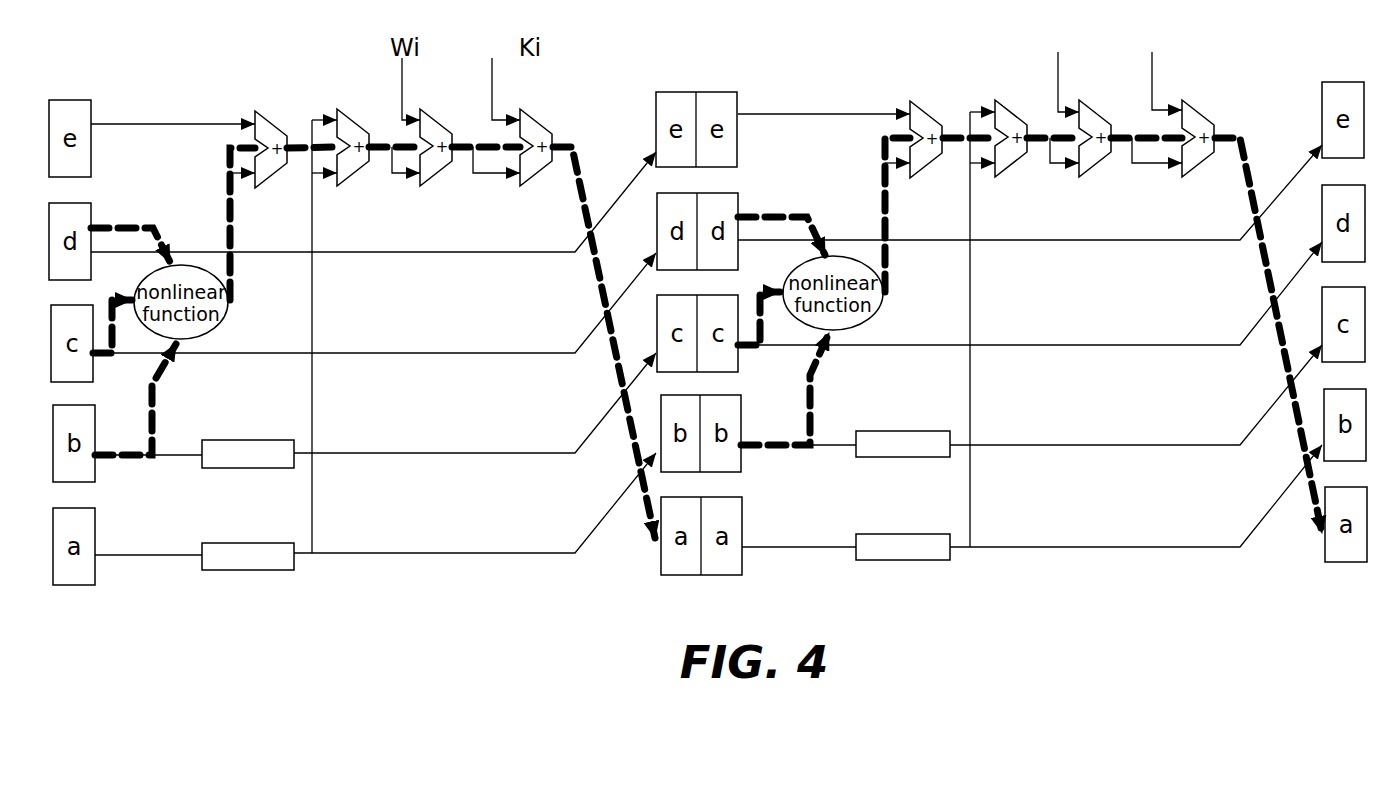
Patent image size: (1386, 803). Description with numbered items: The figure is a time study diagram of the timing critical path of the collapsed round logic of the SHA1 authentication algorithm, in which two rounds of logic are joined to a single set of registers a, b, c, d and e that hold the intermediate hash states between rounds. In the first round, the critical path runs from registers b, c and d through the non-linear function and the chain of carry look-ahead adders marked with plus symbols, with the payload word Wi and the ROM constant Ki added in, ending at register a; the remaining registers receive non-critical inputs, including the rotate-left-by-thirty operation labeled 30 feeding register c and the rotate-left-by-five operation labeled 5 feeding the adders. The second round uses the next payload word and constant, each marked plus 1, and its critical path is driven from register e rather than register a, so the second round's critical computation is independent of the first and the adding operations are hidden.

The rotate left by 30 bits 30 is at (576, 449).
The rotate left by 5 bits 5 is at (576, 552).
The next round message word and constant (Wi+1, Ki+1) 1 is at (1113, 70).